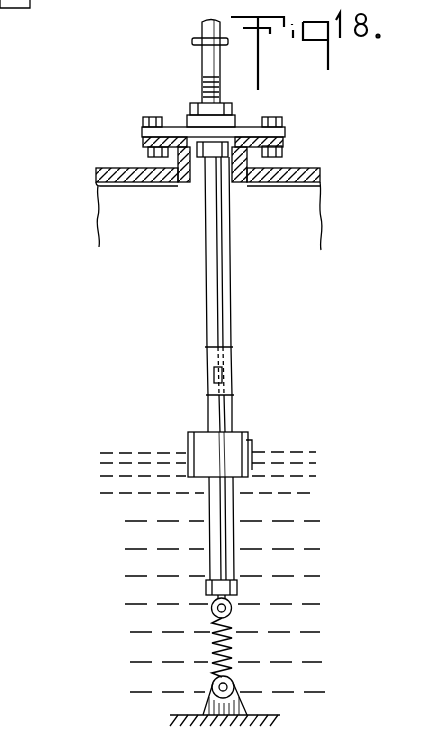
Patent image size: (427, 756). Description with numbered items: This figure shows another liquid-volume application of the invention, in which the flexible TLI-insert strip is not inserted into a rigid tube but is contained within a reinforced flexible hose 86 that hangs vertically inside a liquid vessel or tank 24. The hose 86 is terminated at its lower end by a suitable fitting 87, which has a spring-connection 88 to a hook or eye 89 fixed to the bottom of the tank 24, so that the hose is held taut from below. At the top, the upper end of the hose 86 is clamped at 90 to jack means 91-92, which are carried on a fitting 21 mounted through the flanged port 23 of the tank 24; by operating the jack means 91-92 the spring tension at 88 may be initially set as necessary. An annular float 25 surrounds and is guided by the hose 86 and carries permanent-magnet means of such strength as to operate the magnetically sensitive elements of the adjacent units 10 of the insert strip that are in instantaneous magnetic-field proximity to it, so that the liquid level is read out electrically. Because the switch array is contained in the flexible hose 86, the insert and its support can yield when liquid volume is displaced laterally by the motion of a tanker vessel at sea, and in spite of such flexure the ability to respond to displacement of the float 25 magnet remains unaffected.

The unit 10 is at (222, 375).
The fitting 21 is at (237, 120).
The flanged port 23 is at (287, 134).
The liquid vessel or tank 24 is at (307, 168).
The annular float 25 is at (250, 437).
The reinforced flexible hose 86 is at (207, 400).
The fitting 87 is at (229, 620).
The spring-connection 88 is at (231, 664).
The hook or eye 89 is at (234, 688).
The clamp 90 is at (214, 160).
The jack means 91 is at (209, 57).
The jack means 92 is at (199, 105).